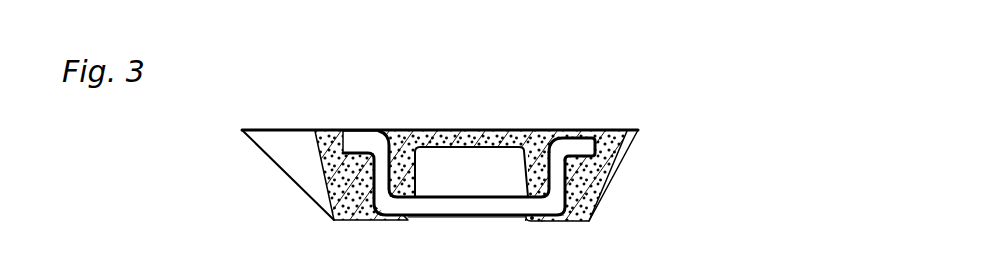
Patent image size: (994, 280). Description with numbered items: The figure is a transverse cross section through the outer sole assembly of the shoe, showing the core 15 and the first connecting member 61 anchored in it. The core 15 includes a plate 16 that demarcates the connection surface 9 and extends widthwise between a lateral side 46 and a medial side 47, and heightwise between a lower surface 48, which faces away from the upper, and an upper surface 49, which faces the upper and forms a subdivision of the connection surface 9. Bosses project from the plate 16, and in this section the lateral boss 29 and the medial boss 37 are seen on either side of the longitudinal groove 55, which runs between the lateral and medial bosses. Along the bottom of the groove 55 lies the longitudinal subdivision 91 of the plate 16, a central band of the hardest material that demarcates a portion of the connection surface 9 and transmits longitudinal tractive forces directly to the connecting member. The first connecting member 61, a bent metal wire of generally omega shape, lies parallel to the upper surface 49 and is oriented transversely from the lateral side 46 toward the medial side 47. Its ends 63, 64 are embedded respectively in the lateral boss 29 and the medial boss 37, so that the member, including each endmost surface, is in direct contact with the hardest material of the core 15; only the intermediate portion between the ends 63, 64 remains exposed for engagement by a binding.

The connection surface 9 is at (415, 132).
The core 15 is at (602, 113).
The plate 16 is at (535, 137).
The lateral boss 29 is at (348, 204).
The medial boss 37 is at (580, 212).
The lateral side 46 is at (295, 183).
The medial side 47 is at (613, 170).
The lower surface 48 is at (535, 223).
The upper surface 49 is at (472, 135).
The longitudinal groove 55 is at (486, 167).
The first connecting member 61 is at (447, 216).
The end of connecting member 63 is at (360, 135).
The end of connecting member 64 is at (588, 148).
The longitudinal subdivision 91 is at (443, 137).